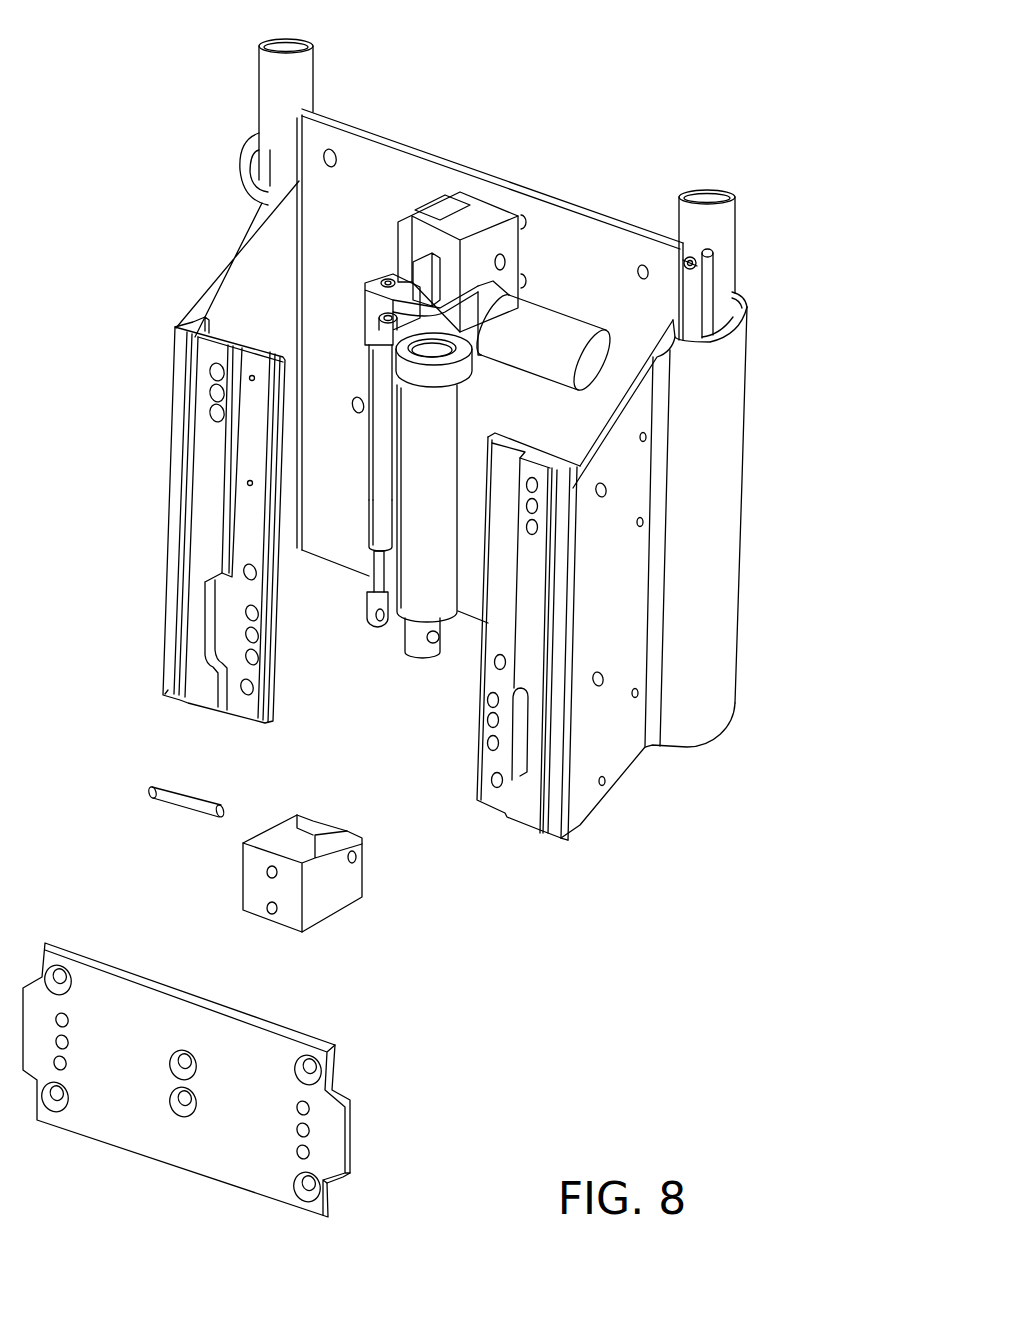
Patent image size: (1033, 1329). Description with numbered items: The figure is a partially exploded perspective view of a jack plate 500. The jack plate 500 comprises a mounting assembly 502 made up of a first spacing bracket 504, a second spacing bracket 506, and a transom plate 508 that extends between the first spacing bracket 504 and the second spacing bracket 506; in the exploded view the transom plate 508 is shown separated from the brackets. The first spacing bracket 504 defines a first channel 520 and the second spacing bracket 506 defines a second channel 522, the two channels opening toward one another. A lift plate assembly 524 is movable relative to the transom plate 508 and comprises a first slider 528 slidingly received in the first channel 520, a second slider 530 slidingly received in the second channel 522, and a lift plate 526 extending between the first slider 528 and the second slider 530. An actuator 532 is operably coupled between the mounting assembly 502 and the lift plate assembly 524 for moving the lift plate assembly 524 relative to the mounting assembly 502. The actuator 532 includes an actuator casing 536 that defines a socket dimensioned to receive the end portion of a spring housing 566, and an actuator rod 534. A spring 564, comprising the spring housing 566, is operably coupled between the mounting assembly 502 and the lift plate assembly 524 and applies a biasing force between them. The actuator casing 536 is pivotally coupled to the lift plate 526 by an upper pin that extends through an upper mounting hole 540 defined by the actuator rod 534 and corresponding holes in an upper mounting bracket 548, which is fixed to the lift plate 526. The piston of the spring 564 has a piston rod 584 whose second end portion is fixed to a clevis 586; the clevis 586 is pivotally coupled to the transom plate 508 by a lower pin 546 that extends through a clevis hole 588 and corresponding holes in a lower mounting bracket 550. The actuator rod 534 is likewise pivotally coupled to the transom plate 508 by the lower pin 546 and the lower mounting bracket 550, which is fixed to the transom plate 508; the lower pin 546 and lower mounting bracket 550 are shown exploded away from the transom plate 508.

The jack plate 500 is at (557, 1013).
The mounting assembly 502 is at (612, 612).
The first spacing bracket 504 is at (173, 413).
The second spacing bracket 506 is at (583, 828).
The transom plate 508 is at (175, 1163).
The first channel 520 is at (240, 177).
The second channel 522 is at (695, 342).
The lift plate assembly 524 is at (613, 207).
The lift plate 526 is at (368, 127).
The first slider 528 is at (258, 82).
The second slider 530 is at (733, 227).
The actuator 532 is at (445, 418).
The actuator rod 534 is at (434, 726).
The actuator casing 536 is at (365, 302).
The upper mounting hole 540 is at (438, 638).
The lower pin 546 is at (185, 802).
The upper mounting bracket 548 is at (428, 200).
The lower mounting bracket 550 is at (268, 920).
The spring 564 is at (383, 482).
The spring housing 566 is at (367, 523).
The piston rod 584 is at (378, 578).
The clevis 586 is at (235, 657).
The clevis hole 588 is at (382, 620).